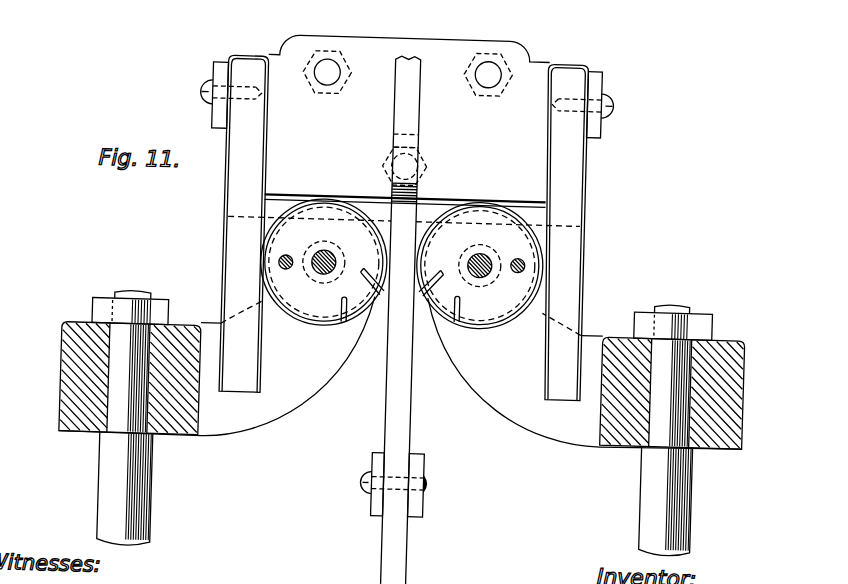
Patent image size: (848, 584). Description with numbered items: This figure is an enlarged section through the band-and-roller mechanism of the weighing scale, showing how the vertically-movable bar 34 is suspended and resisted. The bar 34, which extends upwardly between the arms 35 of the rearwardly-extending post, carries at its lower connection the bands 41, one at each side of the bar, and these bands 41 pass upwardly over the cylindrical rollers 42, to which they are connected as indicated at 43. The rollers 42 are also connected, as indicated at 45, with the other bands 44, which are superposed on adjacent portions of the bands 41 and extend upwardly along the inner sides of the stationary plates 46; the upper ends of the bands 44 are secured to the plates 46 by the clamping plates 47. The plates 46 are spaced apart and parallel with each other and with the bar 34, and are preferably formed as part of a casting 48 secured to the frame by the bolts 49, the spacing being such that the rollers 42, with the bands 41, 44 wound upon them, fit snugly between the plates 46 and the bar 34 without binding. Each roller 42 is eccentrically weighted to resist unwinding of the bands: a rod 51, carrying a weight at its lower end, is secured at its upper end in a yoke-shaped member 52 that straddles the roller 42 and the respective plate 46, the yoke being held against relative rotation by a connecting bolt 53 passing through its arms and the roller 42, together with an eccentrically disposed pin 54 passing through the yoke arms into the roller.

The vertically-movable bar 34 is at (397, 554).
The arms 35 is at (380, 465).
The bands 41 is at (423, 407).
The cylindrical rollers 42 is at (322, 312).
The connection of bands to rollers 43 is at (342, 300).
The bands 44 is at (262, 163).
The connection of bands to rollers 45 is at (362, 270).
The stationary plates 46 is at (230, 183).
The clamping plates 47 is at (212, 77).
The casting 48 is at (525, 63).
The bolts 49 is at (321, 72).
The rods 51 is at (142, 485).
The yoke-shaped members 52 is at (72, 397).
The connecting bolts 53 is at (325, 254).
The eccentrically disposed pins 54 is at (288, 259).